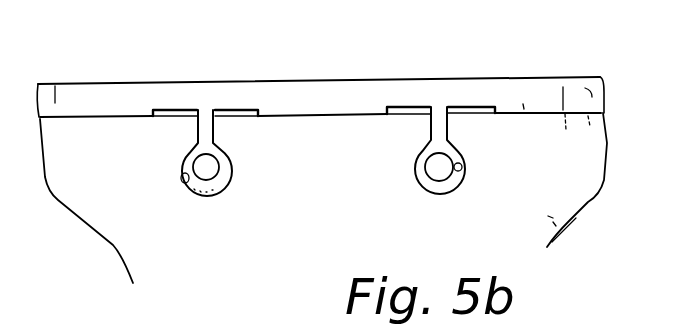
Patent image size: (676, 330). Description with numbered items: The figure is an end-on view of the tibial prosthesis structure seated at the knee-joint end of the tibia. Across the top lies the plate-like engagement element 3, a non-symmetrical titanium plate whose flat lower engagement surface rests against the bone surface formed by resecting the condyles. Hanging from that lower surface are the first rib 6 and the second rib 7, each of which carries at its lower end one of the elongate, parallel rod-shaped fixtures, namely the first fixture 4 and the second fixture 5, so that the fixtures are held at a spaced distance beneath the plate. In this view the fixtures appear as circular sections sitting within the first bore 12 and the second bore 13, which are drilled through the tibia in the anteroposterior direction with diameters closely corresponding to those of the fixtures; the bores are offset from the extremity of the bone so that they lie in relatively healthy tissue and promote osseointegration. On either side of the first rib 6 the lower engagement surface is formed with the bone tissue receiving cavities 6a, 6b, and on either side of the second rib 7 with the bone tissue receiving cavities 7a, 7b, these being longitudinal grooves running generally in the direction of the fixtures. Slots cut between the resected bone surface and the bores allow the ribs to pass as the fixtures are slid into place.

The plate-like engagement element 3 is at (603, 78).
The first rod-shaped fixture 4 is at (214, 196).
The second rod-shaped fixture 5 is at (433, 188).
The first rib 6 is at (210, 147).
The bone tissue receiving cavity 6a is at (165, 108).
The bone tissue receiving cavity 6b is at (248, 108).
The second rib 7 is at (456, 142).
The bone tissue receiving cavity 7a is at (403, 106).
The bone tissue receiving cavity 7b is at (472, 105).
The first bore 12 is at (182, 183).
The second bore 13 is at (466, 172).